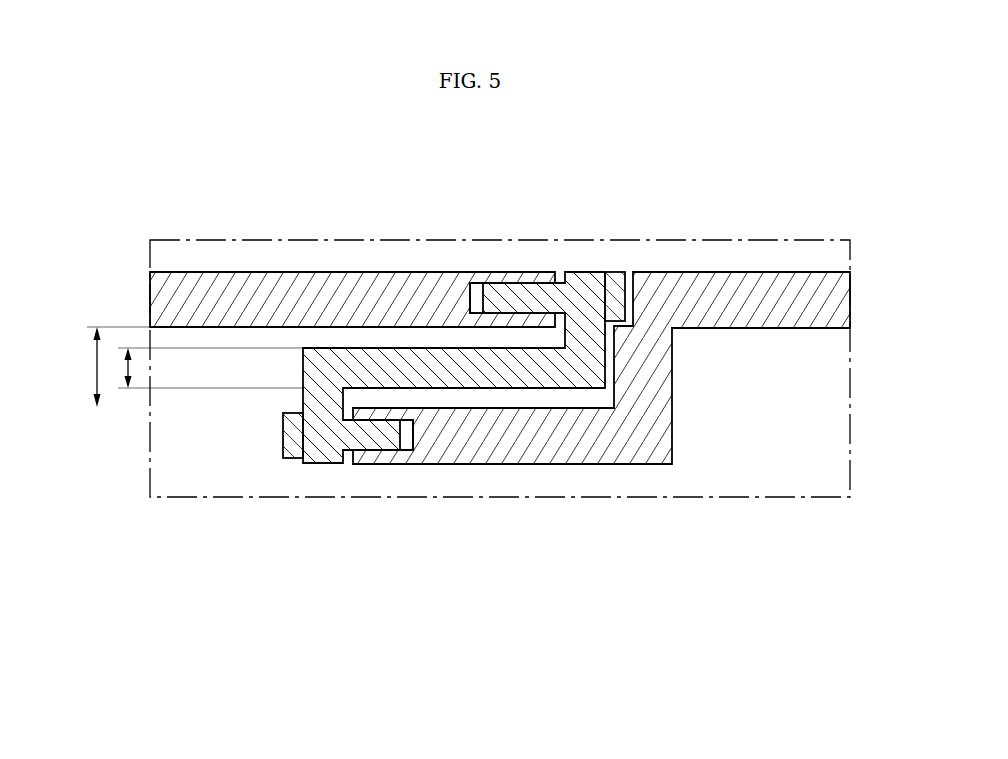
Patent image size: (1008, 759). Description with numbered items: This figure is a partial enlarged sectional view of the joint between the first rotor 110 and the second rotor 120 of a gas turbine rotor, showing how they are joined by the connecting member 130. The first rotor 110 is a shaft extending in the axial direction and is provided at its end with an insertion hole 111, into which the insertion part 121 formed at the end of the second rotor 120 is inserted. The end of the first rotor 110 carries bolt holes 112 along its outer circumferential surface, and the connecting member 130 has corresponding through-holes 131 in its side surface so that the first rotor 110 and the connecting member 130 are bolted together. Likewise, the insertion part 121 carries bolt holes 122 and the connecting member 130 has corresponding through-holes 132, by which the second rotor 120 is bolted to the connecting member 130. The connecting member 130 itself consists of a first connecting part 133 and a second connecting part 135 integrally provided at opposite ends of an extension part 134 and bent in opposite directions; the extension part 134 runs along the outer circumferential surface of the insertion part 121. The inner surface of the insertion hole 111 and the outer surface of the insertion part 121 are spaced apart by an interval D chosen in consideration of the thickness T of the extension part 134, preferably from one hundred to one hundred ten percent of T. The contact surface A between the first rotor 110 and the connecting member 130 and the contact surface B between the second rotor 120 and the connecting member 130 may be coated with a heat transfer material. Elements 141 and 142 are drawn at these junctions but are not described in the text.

The first rotor 110 is at (318, 272).
The insertion hole 111 is at (242, 338).
The bolt holes 112 is at (472, 298).
The second rotor 120 is at (786, 272).
The insertion part 121 is at (562, 437).
The bolt holes 122 is at (412, 437).
The connecting member 130 is at (498, 452).
The through-holes 131 is at (589, 285).
The through-holes 132 is at (328, 456).
The first connecting part 133 is at (597, 330).
The extension part 134 is at (488, 373).
The second connecting part 135 is at (317, 397).
The first bonding pad 141 is at (615, 273).
The second bonding pad 142 is at (293, 458).
The contact surface A is at (561, 276).
The contact surface B is at (352, 458).
The interval D is at (109, 367).
The thickness T is at (206, 368).